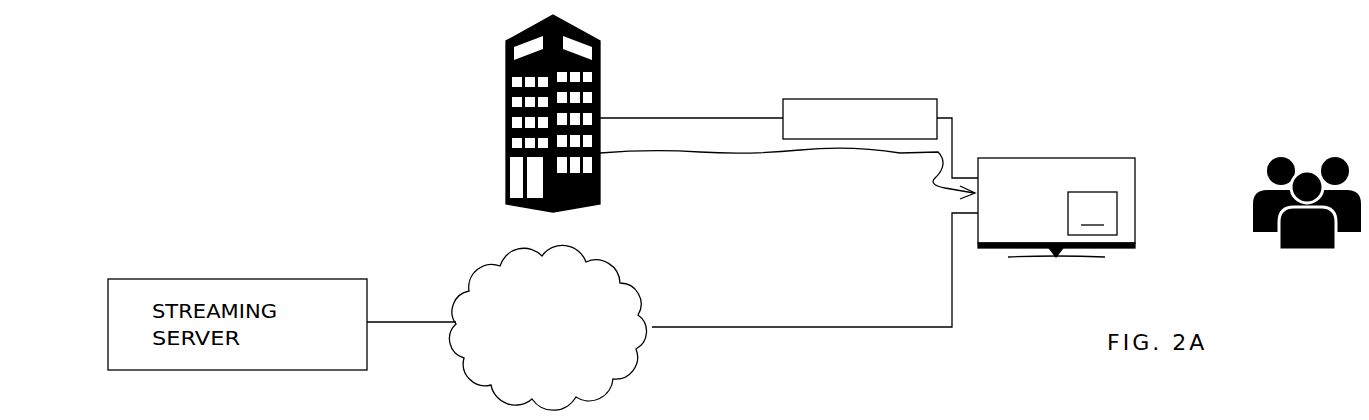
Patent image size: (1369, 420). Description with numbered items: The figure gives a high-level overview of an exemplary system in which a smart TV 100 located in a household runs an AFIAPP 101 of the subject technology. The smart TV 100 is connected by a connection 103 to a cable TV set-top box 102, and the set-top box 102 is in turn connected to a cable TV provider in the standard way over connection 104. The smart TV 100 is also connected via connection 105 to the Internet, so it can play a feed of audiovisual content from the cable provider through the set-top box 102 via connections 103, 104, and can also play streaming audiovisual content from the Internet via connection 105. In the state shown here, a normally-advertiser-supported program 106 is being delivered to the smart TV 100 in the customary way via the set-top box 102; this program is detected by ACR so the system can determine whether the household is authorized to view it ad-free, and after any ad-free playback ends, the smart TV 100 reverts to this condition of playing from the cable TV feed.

The smart TV 100 is at (1074, 177).
The AFIAPP 101 is at (1092, 213).
The cable TV set-top box 102 is at (903, 103).
The connection 103 is at (955, 133).
The connection 104 is at (678, 118).
The connection 105 is at (923, 327).
The normally-advertiser-supported program 106 is at (740, 153).